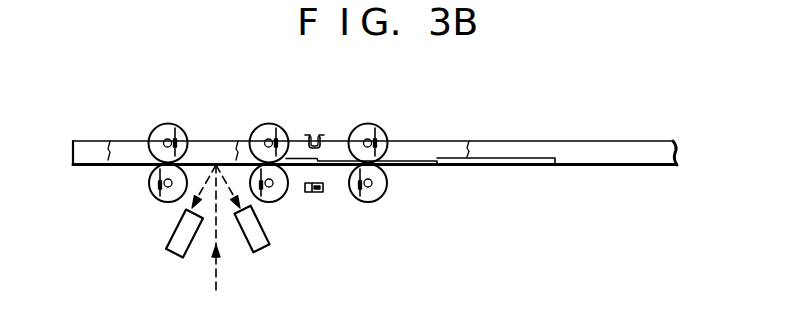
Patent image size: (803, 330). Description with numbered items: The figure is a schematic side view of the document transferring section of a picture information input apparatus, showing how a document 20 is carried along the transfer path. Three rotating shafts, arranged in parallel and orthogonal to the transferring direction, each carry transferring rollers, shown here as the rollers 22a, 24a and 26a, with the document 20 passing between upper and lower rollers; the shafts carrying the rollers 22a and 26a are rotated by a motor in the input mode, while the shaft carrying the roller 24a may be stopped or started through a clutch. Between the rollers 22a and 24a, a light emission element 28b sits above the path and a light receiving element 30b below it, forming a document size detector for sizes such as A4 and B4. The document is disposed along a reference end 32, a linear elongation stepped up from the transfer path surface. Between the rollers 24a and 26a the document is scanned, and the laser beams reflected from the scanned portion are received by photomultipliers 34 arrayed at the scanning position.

The reference end 32 is at (599, 152).
The document 20 is at (498, 166).
The roller 26a is at (170, 124).
The roller 24a is at (271, 124).
The roller 22a is at (370, 124).
The light emission element 28b is at (313, 134).
The light receiving element 30b is at (313, 193).
The photomultipliers 34 is at (172, 253).